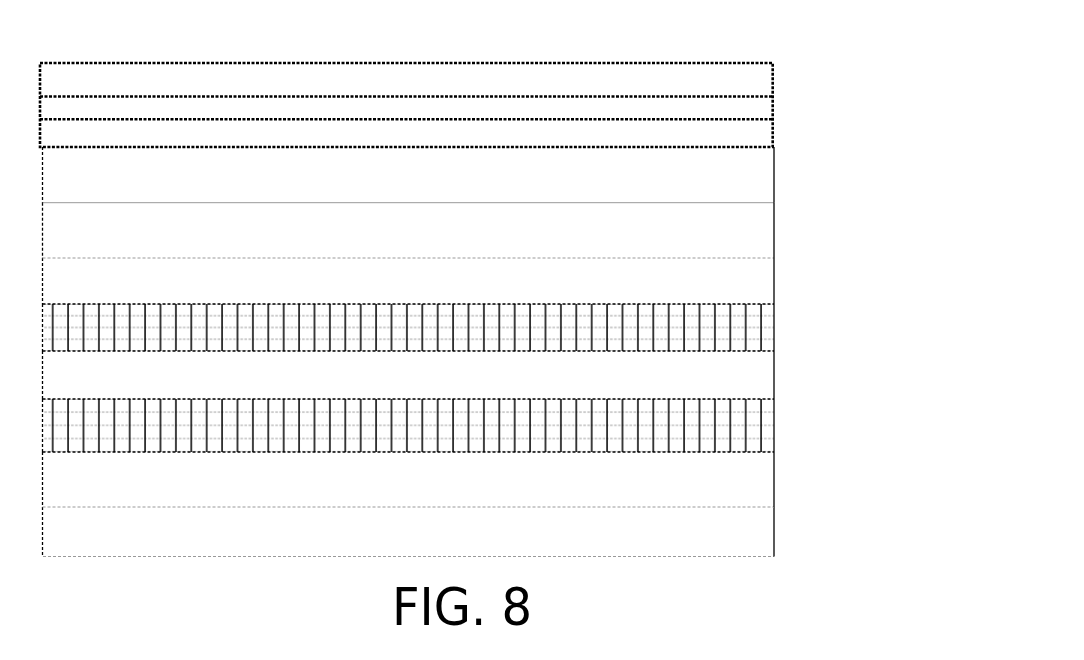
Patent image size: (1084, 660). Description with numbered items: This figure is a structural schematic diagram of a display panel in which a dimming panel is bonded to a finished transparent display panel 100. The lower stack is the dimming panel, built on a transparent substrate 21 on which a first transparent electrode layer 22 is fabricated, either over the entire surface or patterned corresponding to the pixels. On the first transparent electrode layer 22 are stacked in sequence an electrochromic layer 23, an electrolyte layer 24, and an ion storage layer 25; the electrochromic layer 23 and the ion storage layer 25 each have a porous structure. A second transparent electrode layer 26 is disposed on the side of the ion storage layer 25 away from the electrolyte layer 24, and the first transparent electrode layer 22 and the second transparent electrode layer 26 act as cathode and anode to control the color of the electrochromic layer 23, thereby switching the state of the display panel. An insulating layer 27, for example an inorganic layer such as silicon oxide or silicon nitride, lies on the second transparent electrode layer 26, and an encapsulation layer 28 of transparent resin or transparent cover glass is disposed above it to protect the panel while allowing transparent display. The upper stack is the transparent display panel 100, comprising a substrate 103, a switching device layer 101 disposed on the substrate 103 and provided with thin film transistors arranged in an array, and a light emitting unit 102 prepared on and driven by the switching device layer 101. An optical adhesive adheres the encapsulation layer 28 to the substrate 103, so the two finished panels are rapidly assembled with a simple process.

The transparent display panel 100 is at (462, 105).
The switching device layer 101 is at (766, 115).
The light emitting unit 102 is at (762, 86).
The substrate 103 is at (767, 141).
The transparent substrate 21 is at (733, 548).
The first transparent electrode layer 22 is at (733, 480).
The electrochromic layer 23 is at (733, 434).
The electrolyte layer 24 is at (733, 386).
The ion storage layer 25 is at (733, 340).
The second transparent electrode layer 26 is at (733, 285).
The insulating layer 27 is at (733, 236).
The encapsulation layer 28 is at (733, 190).